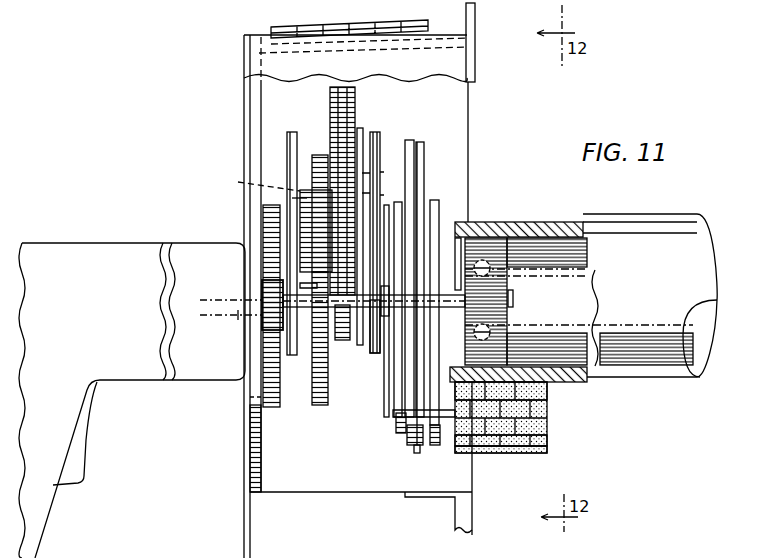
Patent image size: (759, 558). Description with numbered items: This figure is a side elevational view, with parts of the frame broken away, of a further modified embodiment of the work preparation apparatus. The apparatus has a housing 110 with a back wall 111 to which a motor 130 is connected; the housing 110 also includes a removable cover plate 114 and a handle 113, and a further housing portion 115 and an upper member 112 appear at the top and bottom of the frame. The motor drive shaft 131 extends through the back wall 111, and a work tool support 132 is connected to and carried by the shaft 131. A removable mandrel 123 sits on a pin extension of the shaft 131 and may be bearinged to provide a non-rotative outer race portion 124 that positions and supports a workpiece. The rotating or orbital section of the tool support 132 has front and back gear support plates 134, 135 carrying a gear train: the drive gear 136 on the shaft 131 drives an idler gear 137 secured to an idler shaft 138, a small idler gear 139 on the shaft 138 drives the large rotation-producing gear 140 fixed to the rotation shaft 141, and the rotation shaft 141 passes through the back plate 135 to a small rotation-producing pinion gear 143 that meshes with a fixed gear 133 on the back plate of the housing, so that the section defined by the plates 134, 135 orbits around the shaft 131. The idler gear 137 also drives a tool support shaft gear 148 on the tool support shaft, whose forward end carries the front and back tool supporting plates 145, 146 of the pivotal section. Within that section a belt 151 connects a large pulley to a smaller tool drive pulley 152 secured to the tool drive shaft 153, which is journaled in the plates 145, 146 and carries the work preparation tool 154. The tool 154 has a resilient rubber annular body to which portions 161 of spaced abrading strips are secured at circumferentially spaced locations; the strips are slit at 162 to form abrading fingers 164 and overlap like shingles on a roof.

The housing 110 is at (243, 446).
The back wall 111 is at (267, 461).
The top bar 112 is at (258, 37).
The handle 113 is at (474, 37).
The removable cover plate 114 is at (244, 65).
The bottom channel 115 is at (467, 513).
The removable mandrel 123 is at (525, 320).
The non-rotative outer race portion 124 is at (508, 347).
The motor 130 is at (216, 370).
The motor drive shaft 131 is at (235, 318).
The work tool support 132 is at (396, 167).
The fixed gear 133 is at (273, 407).
The front gear support plate 134 is at (380, 140).
The back gear support plate 135 is at (293, 138).
The drive gear 136 is at (366, 338).
The idler gear 137 is at (331, 100).
The idler shaft 138 is at (255, 187).
The small idler gear 139 is at (313, 154).
The large rotation-producing gear 140 is at (325, 407).
The rotation shaft 141 is at (377, 353).
The small rotation-producing pinion gear 143 is at (262, 295).
The front tool supporting plate 145 is at (417, 449).
The back tool supporting plate 146 is at (396, 428).
The tool support shaft gear 148 is at (362, 128).
The belt 151 is at (417, 376).
The smaller tool drive pulley 152 is at (408, 442).
The tool drive shaft 153 is at (450, 447).
The work preparation tool 154 is at (556, 423).
The strip portions 161 is at (547, 406).
The slits 162 is at (530, 452).
The abrading fingers 164 is at (540, 437).